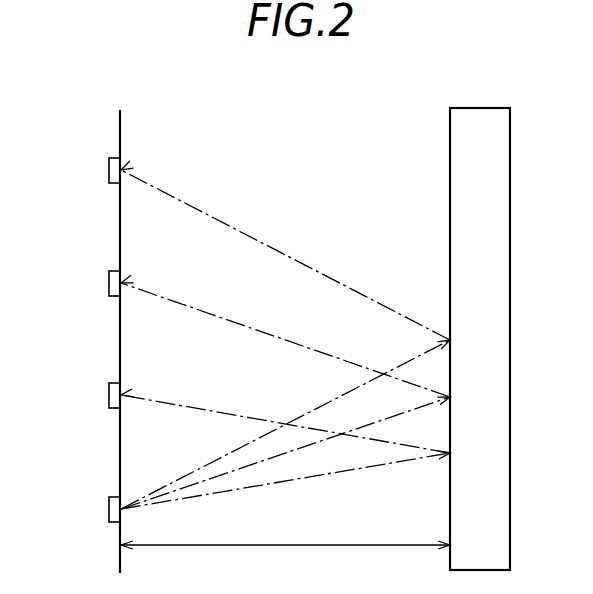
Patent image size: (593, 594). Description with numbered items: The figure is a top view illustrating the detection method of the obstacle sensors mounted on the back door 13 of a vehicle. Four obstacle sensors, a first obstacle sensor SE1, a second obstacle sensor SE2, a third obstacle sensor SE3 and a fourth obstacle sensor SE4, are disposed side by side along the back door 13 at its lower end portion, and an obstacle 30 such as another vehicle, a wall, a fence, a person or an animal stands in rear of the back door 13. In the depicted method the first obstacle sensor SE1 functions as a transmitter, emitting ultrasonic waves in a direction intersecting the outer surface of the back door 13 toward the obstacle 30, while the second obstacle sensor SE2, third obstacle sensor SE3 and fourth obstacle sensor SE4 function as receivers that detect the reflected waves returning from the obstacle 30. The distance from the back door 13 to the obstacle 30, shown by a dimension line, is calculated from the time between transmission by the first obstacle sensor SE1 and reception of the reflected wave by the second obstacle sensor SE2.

The back door 13 is at (121, 142).
The obstacle 30 is at (510, 193).
The first obstacle sensor SE1 is at (109, 509).
The second obstacle sensor SE2 is at (109, 395).
The third obstacle sensor SE3 is at (109, 283).
The fourth obstacle sensor SE4 is at (109, 170).